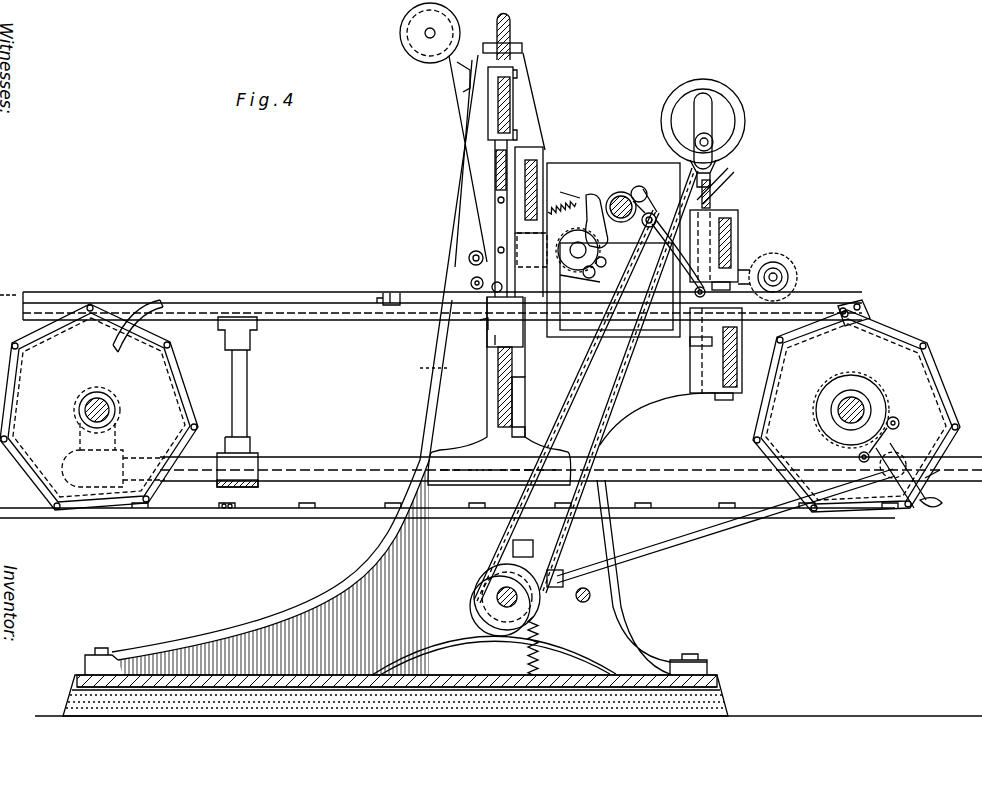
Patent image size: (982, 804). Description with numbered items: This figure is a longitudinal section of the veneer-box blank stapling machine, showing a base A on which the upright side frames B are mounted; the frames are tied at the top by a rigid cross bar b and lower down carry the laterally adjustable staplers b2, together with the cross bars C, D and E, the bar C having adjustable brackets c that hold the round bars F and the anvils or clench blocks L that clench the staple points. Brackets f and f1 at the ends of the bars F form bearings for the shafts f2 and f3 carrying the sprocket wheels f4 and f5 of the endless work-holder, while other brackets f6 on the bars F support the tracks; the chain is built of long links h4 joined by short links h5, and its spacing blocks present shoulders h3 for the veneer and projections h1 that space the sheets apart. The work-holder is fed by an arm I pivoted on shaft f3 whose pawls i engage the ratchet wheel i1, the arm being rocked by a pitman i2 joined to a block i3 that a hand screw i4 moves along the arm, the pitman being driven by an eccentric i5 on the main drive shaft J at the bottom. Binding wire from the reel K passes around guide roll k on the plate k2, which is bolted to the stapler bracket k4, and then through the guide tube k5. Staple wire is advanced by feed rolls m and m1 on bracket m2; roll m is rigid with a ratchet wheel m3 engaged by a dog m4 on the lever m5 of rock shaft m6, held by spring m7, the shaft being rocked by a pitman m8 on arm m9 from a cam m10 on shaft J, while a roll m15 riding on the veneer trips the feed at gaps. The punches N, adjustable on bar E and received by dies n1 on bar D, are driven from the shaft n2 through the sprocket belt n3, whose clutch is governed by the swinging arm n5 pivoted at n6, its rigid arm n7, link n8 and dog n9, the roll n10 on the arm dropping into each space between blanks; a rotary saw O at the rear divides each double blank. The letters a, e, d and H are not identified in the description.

The base A is at (272, 703).
The side frame B is at (380, 538).
The cross bar b is at (510, 40).
The slot a is at (511, 107).
The reel K is at (420, 45).
The stapler b2 is at (528, 195).
The bracket m2 is at (516, 245).
The lever m5 is at (585, 195).
The spring m7 is at (570, 190).
The arm m9 is at (610, 195).
The rock shaft m6 is at (618, 198).
The dog or pawl m4 is at (598, 252).
The feed roll m1 is at (591, 279).
The feed roll m is at (578, 272).
The ratchet wheel m3 is at (556, 237).
The roll m15 is at (505, 322).
The bracket k4 is at (516, 291).
The guide roll k is at (470, 256).
The plate k2 is at (468, 272).
The guide tube k5 is at (488, 325).
The adjustable bracket c is at (497, 338).
The cross bar C is at (498, 387).
The clench block or anvil L is at (426, 369).
The pitman m8 is at (566, 382).
The swinging arm n5 is at (619, 380).
The pivot n6 is at (638, 186).
The arm n7 is at (650, 210).
The link n8 is at (657, 219).
The catch or dog n9 is at (730, 170).
The punch N is at (719, 172).
The shaft n2 is at (715, 135).
The lug e is at (742, 232).
The cross bar E is at (742, 246).
The rotary saw O is at (780, 257).
The roll n10 is at (704, 293).
The cross bar D is at (742, 356).
The lug d is at (714, 400).
The block or die n1 is at (695, 340).
The sprocket belt connection n3 is at (606, 428).
The long link h4 is at (313, 284).
The spacing projection h1 is at (396, 292).
The shoulder h3 is at (381, 293).
The lower rail H is at (200, 520).
The short link h5 is at (232, 518).
The round bar F is at (313, 452).
The bracket f is at (112, 463).
The shaft f2 is at (107, 405).
The sprocket wheel f4 is at (180, 413).
The bracket f6 is at (244, 381).
The bracket f1 is at (813, 432).
The shaft f3 is at (853, 396).
The sprocket wheel f5 is at (866, 330).
The ratchet wheel i1 is at (882, 425).
The ratchet pawl i is at (883, 425).
The block i3 is at (897, 450).
The arm I is at (932, 467).
The hand screw i4 is at (925, 508).
The pitman i2 is at (726, 526).
The eccentric i5 is at (530, 595).
The main drive shaft J is at (480, 612).
The cam m10 is at (478, 602).